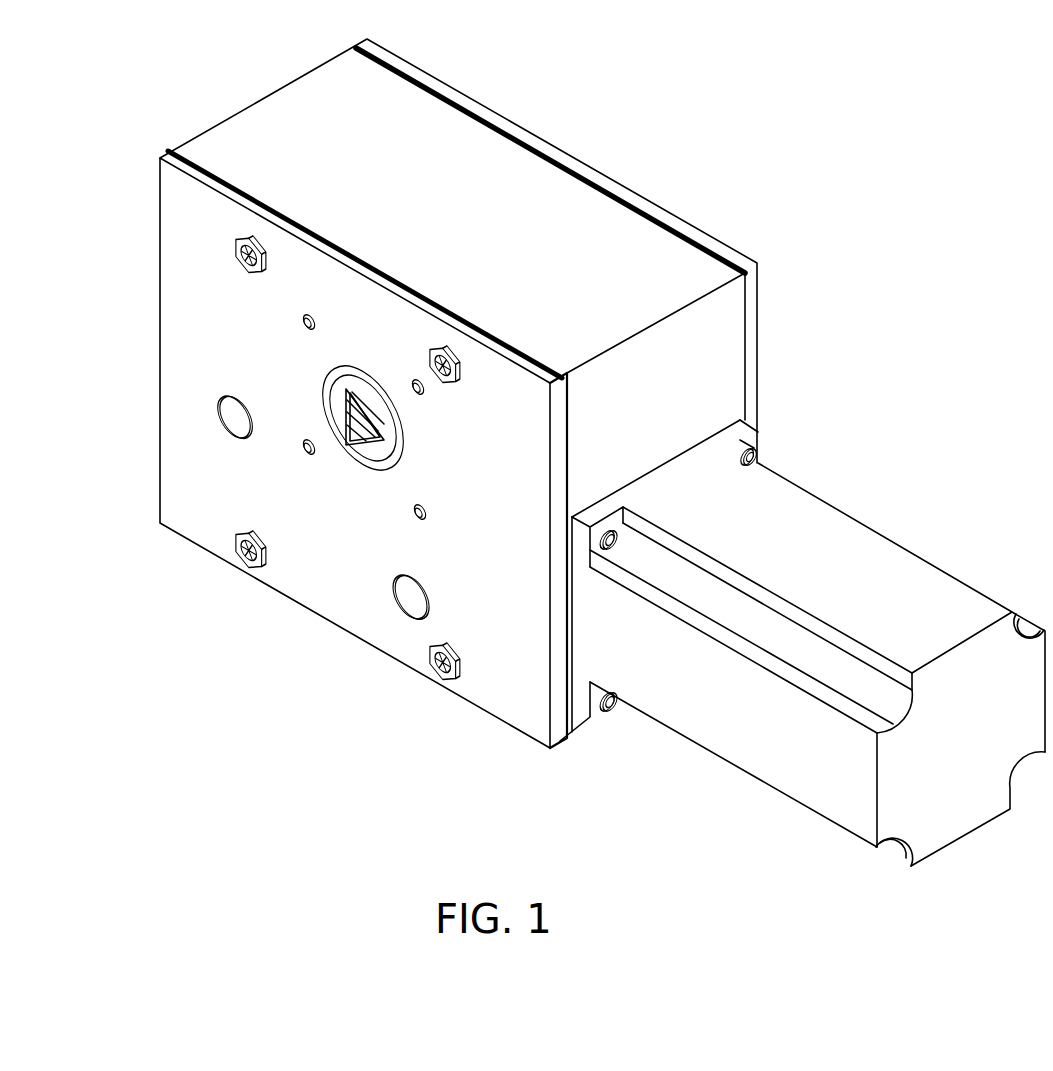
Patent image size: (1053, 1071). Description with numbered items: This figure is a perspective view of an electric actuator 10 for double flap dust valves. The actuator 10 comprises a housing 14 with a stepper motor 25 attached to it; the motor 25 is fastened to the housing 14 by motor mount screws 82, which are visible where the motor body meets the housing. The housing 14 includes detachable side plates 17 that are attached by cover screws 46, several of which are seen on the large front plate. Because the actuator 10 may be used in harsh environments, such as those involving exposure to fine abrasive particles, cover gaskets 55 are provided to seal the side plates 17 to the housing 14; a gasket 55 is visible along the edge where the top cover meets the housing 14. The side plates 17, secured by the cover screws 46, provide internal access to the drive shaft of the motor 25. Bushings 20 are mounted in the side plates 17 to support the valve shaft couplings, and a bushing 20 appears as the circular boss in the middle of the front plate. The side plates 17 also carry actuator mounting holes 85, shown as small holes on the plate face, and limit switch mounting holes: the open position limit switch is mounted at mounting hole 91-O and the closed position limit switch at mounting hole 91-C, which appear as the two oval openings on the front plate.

The electric actuator 10 is at (868, 265).
The housing 14 is at (213, 125).
The side plates 17 is at (160, 384).
The bushings 20 is at (325, 397).
The stepper motor 25 is at (701, 745).
The cover screws 46 is at (238, 244).
The cover gaskets 55 is at (168, 153).
The motor mount screws 82 is at (607, 706).
The actuator mounting holes 85 is at (303, 449).
The open position limit switch mounting hole 91-O is at (220, 428).
The closed position limit switch mounting hole 91-C is at (397, 605).